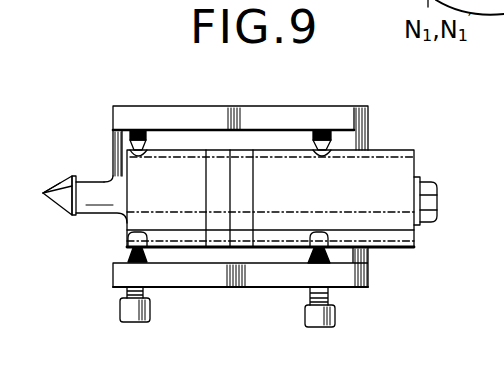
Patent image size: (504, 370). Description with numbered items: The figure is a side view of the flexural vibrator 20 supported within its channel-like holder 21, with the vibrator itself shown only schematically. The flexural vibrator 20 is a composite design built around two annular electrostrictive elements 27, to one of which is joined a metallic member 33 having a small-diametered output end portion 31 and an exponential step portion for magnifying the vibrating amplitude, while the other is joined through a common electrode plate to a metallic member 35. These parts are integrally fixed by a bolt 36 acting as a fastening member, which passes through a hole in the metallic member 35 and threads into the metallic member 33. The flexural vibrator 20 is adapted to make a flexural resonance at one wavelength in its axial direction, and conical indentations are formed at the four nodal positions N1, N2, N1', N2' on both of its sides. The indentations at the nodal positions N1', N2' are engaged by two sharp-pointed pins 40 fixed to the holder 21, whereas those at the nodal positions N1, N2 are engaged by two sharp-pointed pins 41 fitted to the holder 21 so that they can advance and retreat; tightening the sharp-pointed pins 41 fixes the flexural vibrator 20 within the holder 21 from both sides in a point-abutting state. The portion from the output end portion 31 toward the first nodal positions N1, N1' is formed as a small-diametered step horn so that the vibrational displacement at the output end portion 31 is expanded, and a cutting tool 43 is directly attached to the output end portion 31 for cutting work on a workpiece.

The flexural vibrator 20 is at (398, 232).
The holder 21 is at (224, 285).
The electrostrictive element 27 is at (241, 165).
The output end portion 31 is at (68, 207).
The metallic member 33 is at (95, 181).
The metallic member 35 is at (394, 166).
The bolt 36 is at (434, 182).
The sharp-pointed pins 40 is at (138, 131).
The sharp-pointed pins 41 is at (150, 307).
The cutting tool 43 is at (57, 184).
The nodal position N1 is at (113, 256).
The nodal position N2 is at (296, 279).
The nodal position N1' is at (160, 106).
The nodal position N2' is at (339, 106).